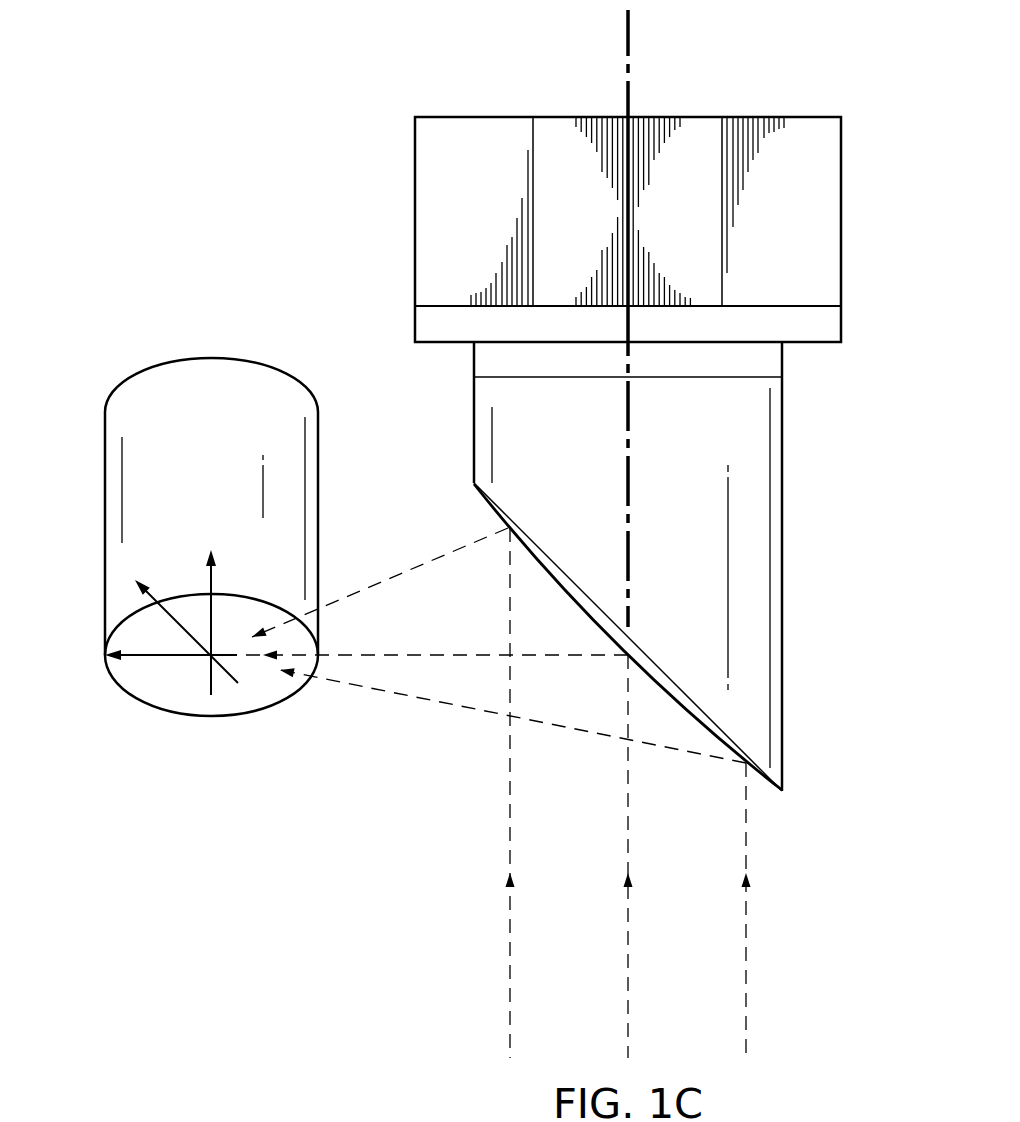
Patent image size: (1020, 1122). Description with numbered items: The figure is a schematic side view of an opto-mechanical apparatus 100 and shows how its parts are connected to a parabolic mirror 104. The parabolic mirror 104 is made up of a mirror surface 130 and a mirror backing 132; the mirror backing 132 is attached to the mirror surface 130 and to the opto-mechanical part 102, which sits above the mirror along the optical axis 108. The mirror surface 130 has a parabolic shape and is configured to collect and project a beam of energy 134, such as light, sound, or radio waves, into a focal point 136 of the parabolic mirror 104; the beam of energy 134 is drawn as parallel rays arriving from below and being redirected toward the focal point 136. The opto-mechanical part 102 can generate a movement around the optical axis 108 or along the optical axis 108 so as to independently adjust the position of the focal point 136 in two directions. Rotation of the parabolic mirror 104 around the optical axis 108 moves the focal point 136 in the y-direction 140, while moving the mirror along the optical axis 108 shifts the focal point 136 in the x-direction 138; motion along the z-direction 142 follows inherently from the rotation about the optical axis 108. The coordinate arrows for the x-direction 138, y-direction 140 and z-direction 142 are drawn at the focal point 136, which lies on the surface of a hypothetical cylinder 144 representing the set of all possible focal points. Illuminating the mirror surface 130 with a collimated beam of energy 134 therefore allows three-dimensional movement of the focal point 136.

The opto-mechanical apparatus 100 is at (268, 67).
The opto-mechanical part 102 is at (841, 226).
The parabolic mirror 104 is at (783, 481).
The optical axis 108 is at (629, 33).
The mirror surface 130 is at (762, 779).
The mirror backing 132 is at (760, 571).
The beam of energy 134 is at (629, 970).
The focal point 136 is at (197, 669).
The x-direction 138 is at (214, 579).
The y-direction 140 is at (167, 657).
The z-direction 142 is at (182, 618).
The hypothetical cylinder 144 is at (104, 538).